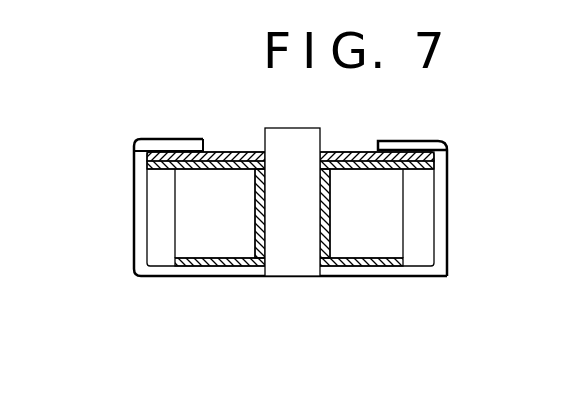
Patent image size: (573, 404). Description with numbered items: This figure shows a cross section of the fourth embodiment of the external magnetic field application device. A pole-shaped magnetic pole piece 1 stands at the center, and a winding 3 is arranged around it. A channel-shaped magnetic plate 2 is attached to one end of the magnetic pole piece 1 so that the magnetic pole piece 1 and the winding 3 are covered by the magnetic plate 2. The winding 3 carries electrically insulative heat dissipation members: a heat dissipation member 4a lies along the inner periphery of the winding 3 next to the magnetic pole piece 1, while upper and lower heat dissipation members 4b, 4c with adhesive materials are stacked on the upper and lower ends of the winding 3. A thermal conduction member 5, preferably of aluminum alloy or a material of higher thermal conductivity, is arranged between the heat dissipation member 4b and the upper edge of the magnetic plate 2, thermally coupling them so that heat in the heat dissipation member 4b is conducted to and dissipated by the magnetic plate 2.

The magnetic pole piece 1 is at (318, 130).
The magnetic plate 2 is at (403, 141).
The winding 3 is at (382, 250).
The heat dissipation member 4a is at (328, 250).
The heat dissipation member 4b is at (181, 168).
The heat dissipation member 4c is at (175, 264).
The thermal conduction member 5 is at (427, 143).